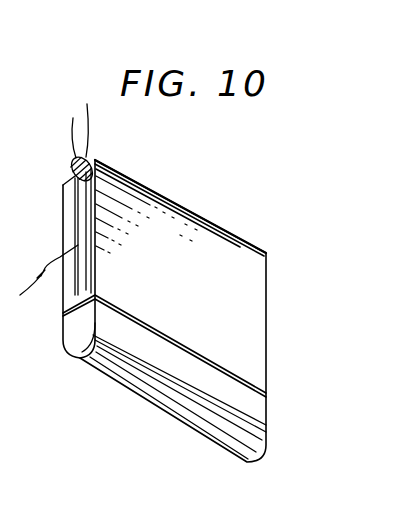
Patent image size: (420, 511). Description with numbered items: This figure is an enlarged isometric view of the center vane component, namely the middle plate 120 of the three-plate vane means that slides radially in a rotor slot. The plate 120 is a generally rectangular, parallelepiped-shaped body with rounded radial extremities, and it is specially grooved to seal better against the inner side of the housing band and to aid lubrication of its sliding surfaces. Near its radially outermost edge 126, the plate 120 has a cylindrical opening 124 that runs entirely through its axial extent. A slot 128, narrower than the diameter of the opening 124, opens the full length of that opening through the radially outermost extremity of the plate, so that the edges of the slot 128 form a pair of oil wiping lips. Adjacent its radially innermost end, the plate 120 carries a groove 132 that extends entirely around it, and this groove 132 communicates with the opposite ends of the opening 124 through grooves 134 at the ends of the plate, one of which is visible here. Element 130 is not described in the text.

The middle plate 120 is at (190, 242).
The cylindrical opening 124 is at (67, 181).
The radially outermost edge 126 is at (133, 178).
The slot 128 is at (90, 157).
The strap 130 is at (75, 121).
The groove 132 is at (178, 337).
The grooves 134 is at (39, 279).